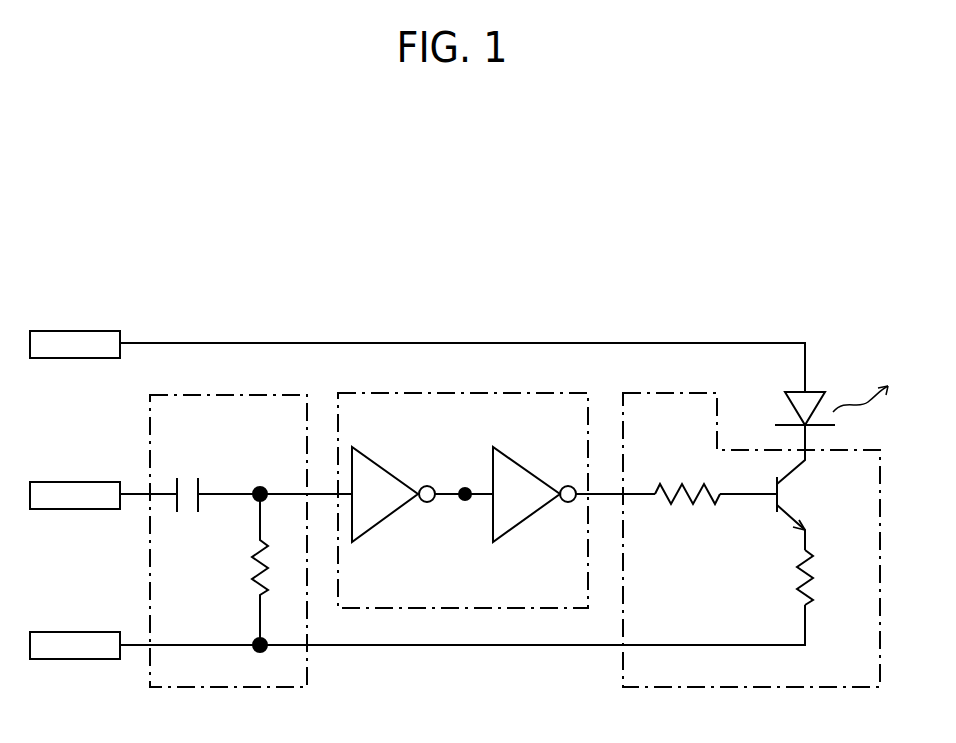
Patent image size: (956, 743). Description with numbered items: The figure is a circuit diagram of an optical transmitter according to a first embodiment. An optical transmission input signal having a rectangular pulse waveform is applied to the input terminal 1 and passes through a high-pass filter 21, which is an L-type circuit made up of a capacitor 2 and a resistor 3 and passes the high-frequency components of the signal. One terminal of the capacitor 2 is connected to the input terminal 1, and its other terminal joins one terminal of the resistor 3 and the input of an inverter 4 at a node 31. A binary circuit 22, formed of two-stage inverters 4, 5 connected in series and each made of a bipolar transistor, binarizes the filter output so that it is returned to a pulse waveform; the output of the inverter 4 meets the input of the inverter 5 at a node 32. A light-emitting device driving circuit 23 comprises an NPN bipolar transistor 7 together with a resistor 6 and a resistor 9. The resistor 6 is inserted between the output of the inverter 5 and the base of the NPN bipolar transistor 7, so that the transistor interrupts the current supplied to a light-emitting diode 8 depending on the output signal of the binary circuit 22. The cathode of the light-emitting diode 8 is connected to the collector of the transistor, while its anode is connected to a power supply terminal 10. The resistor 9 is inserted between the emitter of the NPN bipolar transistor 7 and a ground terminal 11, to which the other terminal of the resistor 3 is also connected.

The input terminal 1 is at (75, 478).
The capacitor 2 is at (186, 477).
The resistor 3 is at (240, 573).
The inverter 4 is at (393, 488).
The inverter 5 is at (534, 488).
The resistor 6 is at (687, 476).
The NPN bipolar transistor 7 is at (809, 487).
The light-emitting diode 8 is at (819, 405).
The resistor 9 is at (819, 577).
The power supply terminal 10 is at (75, 327).
The ground terminal 11 is at (75, 628).
The high-pass filter 21 is at (220, 395).
The binary circuit 22 is at (433, 393).
The light-emitting device driving circuit 23 is at (697, 393).
The node 31 is at (259, 477).
The node 32 is at (464, 513).